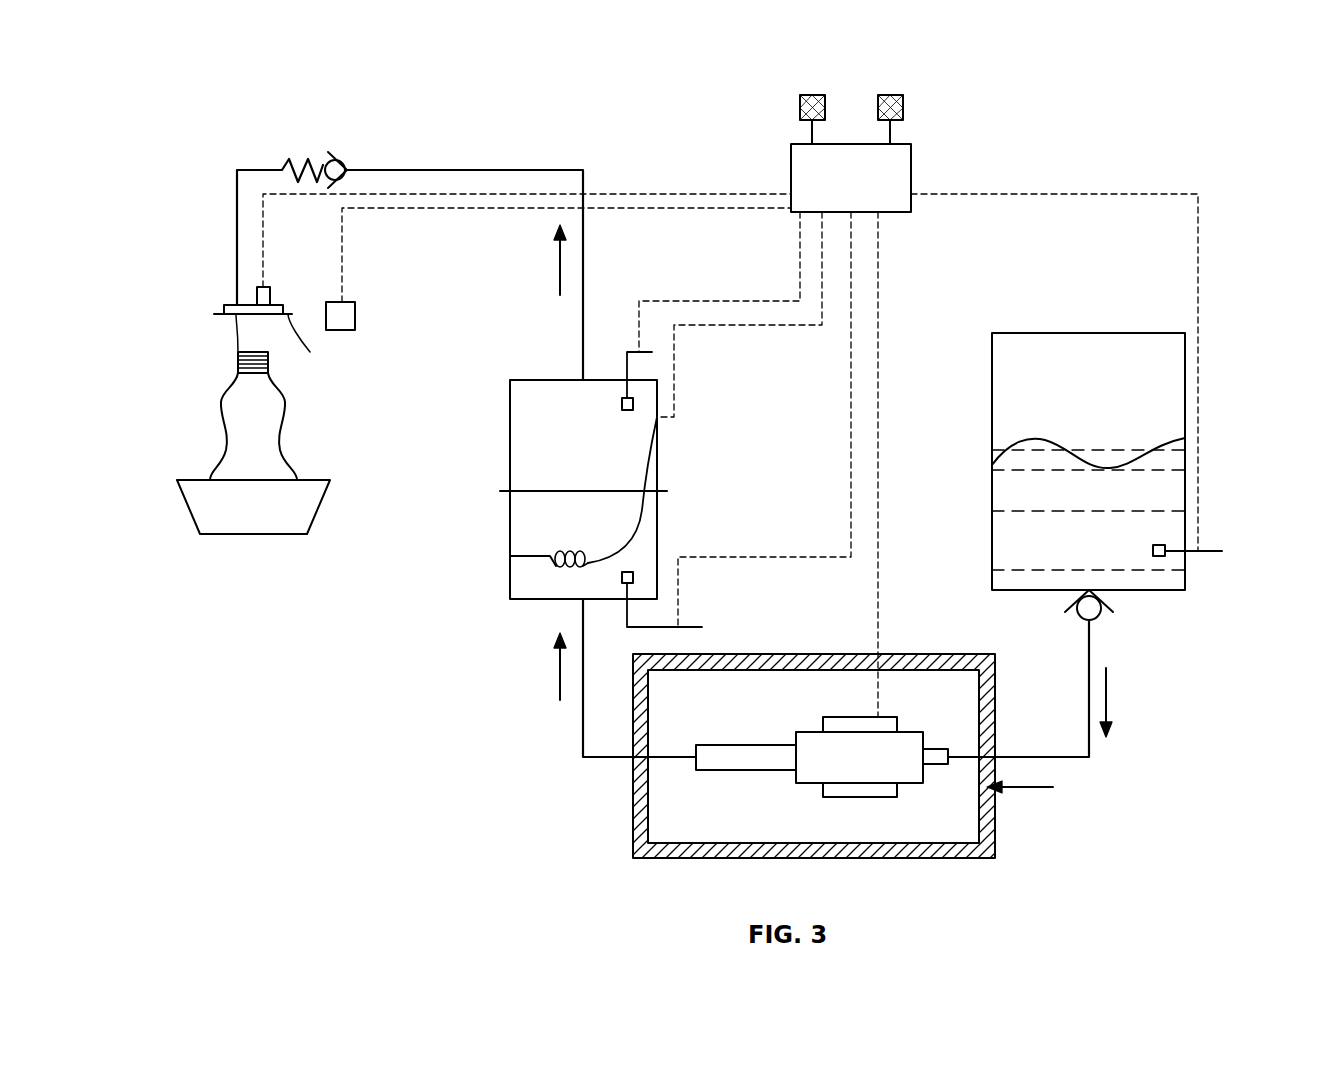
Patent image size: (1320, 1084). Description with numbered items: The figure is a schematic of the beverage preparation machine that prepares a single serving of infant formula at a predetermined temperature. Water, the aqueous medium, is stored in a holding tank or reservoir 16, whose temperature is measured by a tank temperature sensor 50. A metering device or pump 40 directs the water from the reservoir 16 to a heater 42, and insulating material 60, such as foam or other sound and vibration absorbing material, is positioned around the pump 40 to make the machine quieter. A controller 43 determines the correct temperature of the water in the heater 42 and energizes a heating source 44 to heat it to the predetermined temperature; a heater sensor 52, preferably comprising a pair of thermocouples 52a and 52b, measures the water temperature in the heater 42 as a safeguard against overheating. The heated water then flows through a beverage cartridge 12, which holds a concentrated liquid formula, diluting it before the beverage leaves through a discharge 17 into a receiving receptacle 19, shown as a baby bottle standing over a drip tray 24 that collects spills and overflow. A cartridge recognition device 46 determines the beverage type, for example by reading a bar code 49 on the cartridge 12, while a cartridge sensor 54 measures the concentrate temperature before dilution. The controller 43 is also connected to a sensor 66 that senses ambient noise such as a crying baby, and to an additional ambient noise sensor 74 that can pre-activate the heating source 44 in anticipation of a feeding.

The beverage cartridge 12 is at (233, 304).
The discharge 17 is at (237, 317).
The receiving receptacle 19 is at (220, 410).
The drip tray 24 is at (202, 504).
The bar code 49 is at (281, 352).
The cartridge sensor 54 is at (265, 287).
The cartridge recognition device 46 is at (350, 313).
The heater sensor 52 is at (650, 336).
The thermocouple 52a is at (652, 352).
The thermocouple 52b is at (700, 627).
The heater 42 is at (510, 570).
The heating source 44 is at (545, 557).
The pump 40 is at (812, 773).
The insulating material 60 is at (690, 860).
The controller 43 is at (904, 167).
The sensor 66 is at (811, 95).
The ambient noise sensor 74 is at (891, 95).
The reservoir 16 is at (1050, 333).
The tank temperature sensor 50 is at (1222, 551).